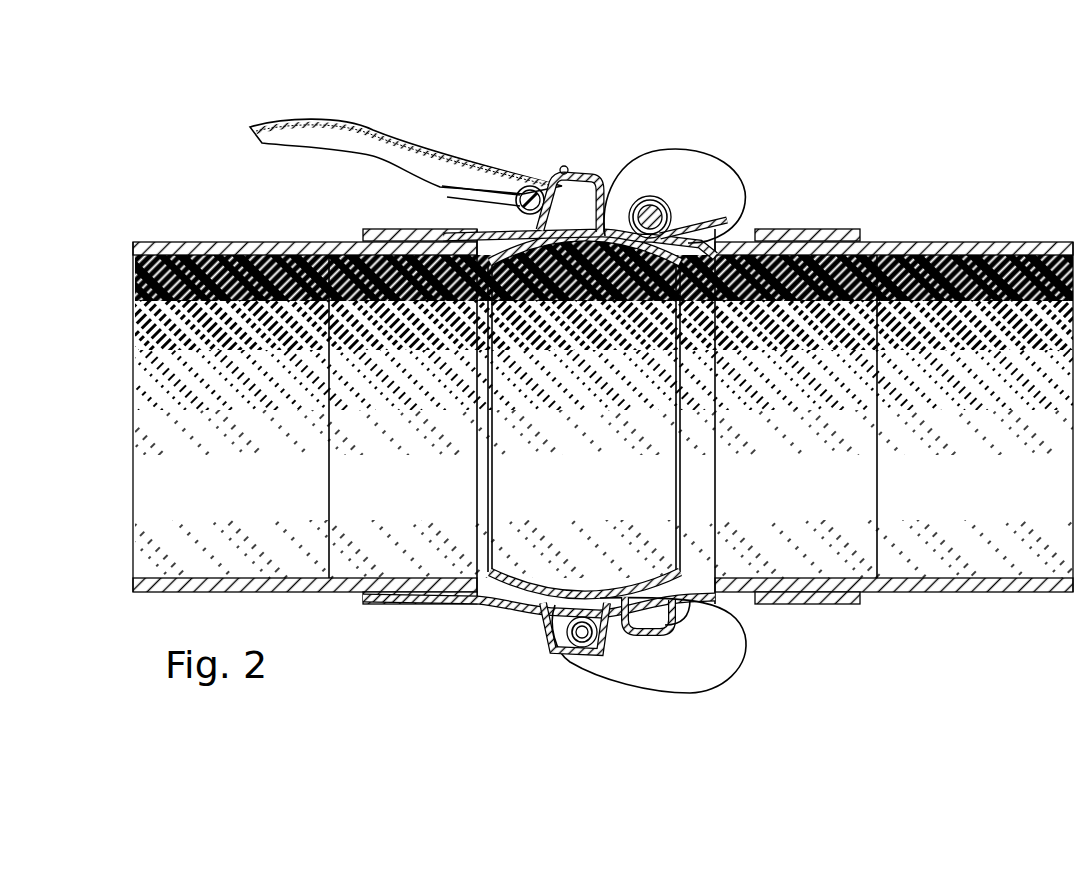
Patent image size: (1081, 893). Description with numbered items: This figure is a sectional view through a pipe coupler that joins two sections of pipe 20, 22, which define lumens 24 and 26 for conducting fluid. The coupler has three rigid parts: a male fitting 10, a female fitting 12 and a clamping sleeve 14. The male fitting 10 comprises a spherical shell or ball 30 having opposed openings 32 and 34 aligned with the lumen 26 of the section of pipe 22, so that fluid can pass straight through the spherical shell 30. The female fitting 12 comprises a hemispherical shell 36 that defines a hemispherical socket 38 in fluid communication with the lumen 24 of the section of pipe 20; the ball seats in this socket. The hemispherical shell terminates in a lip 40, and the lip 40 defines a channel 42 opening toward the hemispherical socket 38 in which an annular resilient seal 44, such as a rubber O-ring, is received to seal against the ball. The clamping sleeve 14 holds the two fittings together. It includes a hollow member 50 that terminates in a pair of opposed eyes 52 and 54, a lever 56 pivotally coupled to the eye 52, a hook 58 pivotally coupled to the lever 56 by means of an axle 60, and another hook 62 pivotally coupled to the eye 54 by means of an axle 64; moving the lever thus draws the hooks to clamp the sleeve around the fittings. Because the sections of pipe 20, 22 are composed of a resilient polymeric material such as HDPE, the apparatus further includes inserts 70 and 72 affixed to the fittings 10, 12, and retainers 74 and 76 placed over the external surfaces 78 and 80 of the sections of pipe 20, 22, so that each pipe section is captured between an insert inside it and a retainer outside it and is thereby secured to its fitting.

The male fitting 10 is at (435, 478).
The female fitting 12 is at (651, 417).
The clamping sleeve 14 is at (583, 455).
The section of pipe 20 is at (894, 376).
The section of pipe 22 is at (305, 377).
The lumen 24 is at (1034, 427).
The lumen 26 is at (219, 413).
The spherical shell 30 is at (585, 538).
The opening 32 is at (433, 427).
The opening 34 is at (734, 514).
The hemispherical shell 36 is at (585, 405).
The hemispherical socket 38 is at (748, 470).
The lip 40 is at (673, 165).
The channel 42 is at (683, 195).
The annular resilient seal 44 is at (646, 661).
The hollow member 50 is at (539, 636).
The eye 52 is at (590, 158).
The eye 54 is at (579, 681).
The lever 56 is at (406, 169).
The hook 58 is at (729, 196).
The axle 60 is at (458, 201).
The hook 62 is at (698, 651).
The axle 64 is at (550, 661).
The insert 70 is at (861, 401).
The insert 72 is at (356, 402).
The retainer 74 is at (858, 615).
The retainer 76 is at (386, 631).
The external surface 78 is at (1052, 595).
The external surface 80 is at (262, 590).